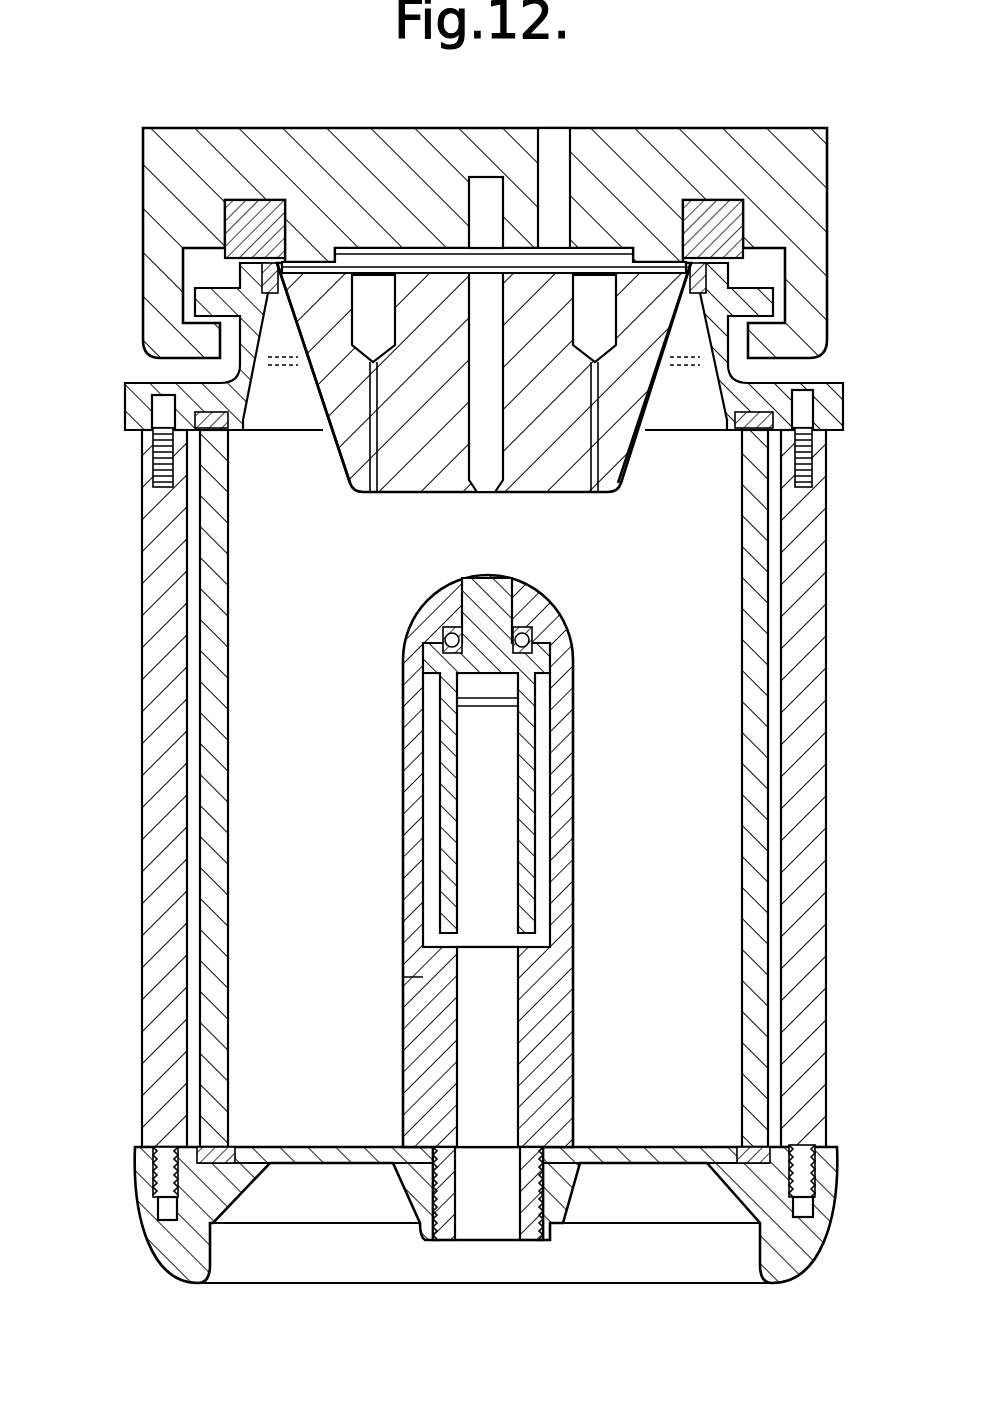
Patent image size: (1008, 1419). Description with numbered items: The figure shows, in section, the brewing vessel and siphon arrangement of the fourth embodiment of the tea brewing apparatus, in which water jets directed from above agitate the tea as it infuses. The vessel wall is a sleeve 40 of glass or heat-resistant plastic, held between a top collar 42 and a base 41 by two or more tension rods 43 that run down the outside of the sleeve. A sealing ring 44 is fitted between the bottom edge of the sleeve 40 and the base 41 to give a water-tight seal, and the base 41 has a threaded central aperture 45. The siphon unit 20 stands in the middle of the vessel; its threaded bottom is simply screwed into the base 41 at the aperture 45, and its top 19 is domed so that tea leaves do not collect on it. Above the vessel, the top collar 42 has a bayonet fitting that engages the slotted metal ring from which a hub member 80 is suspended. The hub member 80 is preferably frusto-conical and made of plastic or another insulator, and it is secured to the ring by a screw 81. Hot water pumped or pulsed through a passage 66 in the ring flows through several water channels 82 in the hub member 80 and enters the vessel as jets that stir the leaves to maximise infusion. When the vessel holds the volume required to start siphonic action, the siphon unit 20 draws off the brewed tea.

The passage 66 is at (553, 160).
The screw 81 is at (482, 203).
The top collar 42 is at (838, 412).
The hub member 80 is at (650, 307).
The water channels 82 is at (370, 310).
The top of the siphon unit 19 is at (462, 592).
The siphon unit 20 is at (372, 692).
The tension rods 43 is at (808, 668).
The sleeve 40 is at (762, 768).
The base 41 is at (826, 1160).
The sealing ring 44 is at (747, 1150).
The central aperture 45 is at (433, 1190).